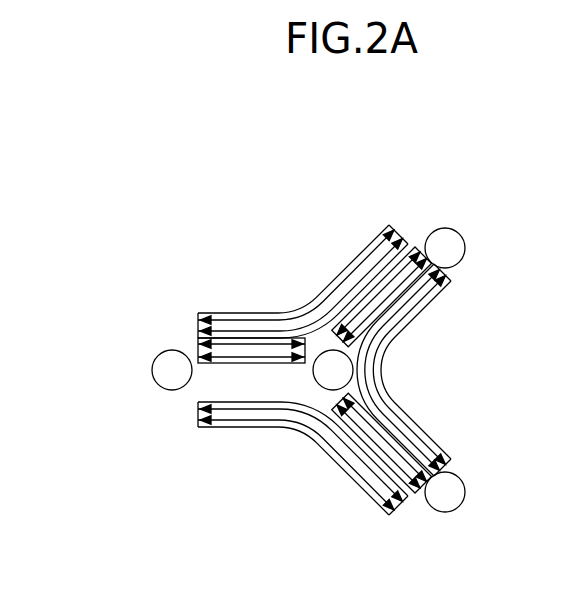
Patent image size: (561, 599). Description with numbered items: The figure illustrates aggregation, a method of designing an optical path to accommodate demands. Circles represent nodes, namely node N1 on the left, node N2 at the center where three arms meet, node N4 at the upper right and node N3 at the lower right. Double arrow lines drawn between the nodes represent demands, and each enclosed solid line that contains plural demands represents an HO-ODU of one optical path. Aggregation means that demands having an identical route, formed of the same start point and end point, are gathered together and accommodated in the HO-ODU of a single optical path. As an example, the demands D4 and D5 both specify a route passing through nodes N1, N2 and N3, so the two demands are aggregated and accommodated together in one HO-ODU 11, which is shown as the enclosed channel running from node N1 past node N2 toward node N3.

The node N1 is at (152, 366).
The node N2 is at (380, 362).
The node N3 is at (462, 504).
The node N4 is at (462, 236).
The HO-ODU 11 is at (303, 470).
The demand D4 is at (240, 428).
The demand D5 is at (290, 428).